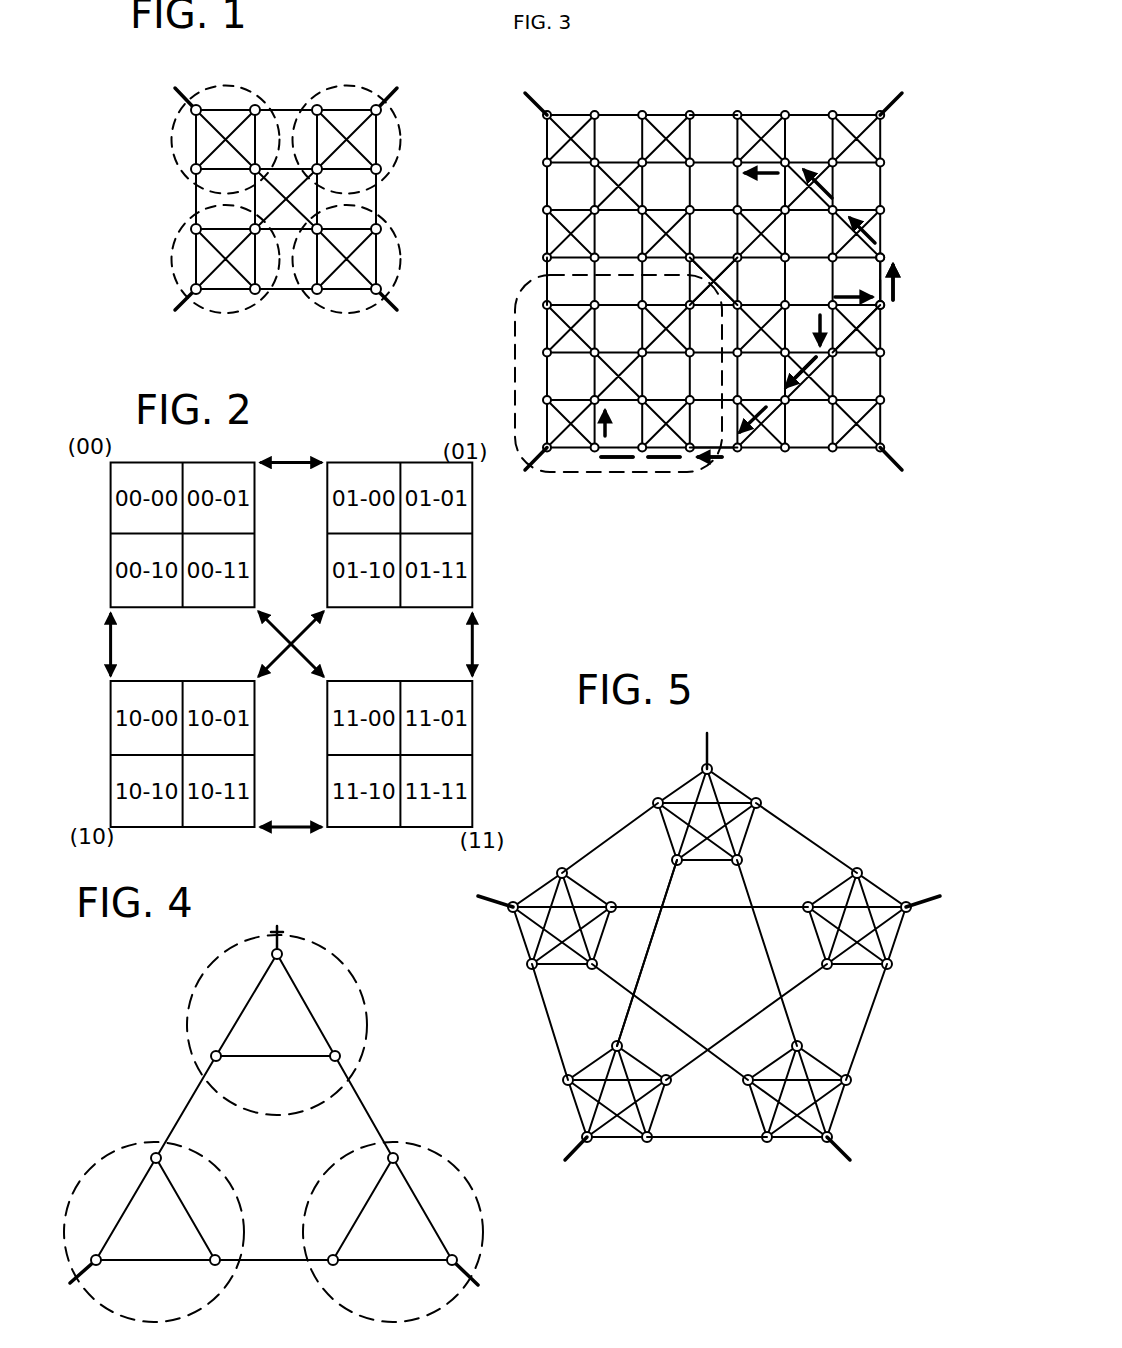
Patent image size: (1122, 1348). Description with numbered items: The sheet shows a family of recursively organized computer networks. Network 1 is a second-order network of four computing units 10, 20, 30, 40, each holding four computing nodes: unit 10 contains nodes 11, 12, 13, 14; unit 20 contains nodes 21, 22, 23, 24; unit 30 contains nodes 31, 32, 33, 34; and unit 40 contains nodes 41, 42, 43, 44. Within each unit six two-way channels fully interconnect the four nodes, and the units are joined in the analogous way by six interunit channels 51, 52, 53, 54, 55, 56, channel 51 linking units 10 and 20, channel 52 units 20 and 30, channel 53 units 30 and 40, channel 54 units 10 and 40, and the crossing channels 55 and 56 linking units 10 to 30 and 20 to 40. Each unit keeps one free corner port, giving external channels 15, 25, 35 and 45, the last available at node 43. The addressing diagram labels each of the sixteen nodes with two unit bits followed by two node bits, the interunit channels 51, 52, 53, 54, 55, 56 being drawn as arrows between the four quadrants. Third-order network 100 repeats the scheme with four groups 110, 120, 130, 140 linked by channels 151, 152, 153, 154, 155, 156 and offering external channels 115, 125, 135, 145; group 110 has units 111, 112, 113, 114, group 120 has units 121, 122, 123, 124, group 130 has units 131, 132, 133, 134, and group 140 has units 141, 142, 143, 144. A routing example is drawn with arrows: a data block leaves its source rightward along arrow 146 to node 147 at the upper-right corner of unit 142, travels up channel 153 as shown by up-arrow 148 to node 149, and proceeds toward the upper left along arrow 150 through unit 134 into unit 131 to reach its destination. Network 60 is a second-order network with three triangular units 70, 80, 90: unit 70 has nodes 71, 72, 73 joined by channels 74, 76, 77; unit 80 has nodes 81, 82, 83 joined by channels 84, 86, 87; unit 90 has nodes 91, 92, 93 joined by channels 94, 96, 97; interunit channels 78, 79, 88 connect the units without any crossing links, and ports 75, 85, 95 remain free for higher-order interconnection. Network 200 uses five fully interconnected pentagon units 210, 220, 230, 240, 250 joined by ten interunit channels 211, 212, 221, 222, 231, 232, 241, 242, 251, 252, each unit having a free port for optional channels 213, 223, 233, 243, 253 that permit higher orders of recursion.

In FIG. 1, the network 1 is at (380, 22).
In FIG. 1, the computing unit 10 is at (175, 263).
In FIG. 1, the computing node 11 is at (190, 229).
In FIG. 1, the computing node 12 is at (262, 229).
In FIG. 1, the computing node 13 is at (254, 296).
In FIG. 1, the computing node 14 is at (195, 297).
In FIG. 1, the communication channel 15 is at (181, 300).
In FIG. 1, the computing unit 20 is at (180, 132).
In FIG. 1, the computing node 21 is at (198, 103).
In FIG. 1, the computing node 22 is at (255, 103).
In FIG. 1, the computing node 23 is at (256, 176).
In FIG. 1, the computing node 24 is at (190, 166).
In FIG. 1, the communication channel 25 is at (180, 85).
In FIG. 1, the computing unit 30 is at (401, 141).
In FIG. 1, the computing node 31 is at (319, 103).
In FIG. 1, the computing node 32 is at (383, 112).
In FIG. 1, the computing node 33 is at (383, 169).
In FIG. 1, the computing node 34 is at (324, 173).
In FIG. 1, the communication channel 35 is at (398, 89).
In FIG. 1, the computing unit 40 is at (400, 263).
In FIG. 1, the computing node 41 is at (324, 229).
In FIG. 1, the computing node 42 is at (383, 231).
In FIG. 1, the computing node 43 is at (383, 290).
In FIG. 1, the computing node 44 is at (320, 296).
In FIG. 1, the additional two-way communication channel 45 is at (392, 306).
In FIG. 1, the two-way communication channel 51 is at (194, 196).
In FIG. 2, the two-way communication channel 51 is at (108, 644).
In FIG. 1, the two-way communication channel 52 is at (286, 105).
In FIG. 2, the two-way communication channel 52 is at (291, 461).
In FIG. 1, the two-way communication channel 53 is at (380, 191).
In FIG. 2, the two-way communication channel 53 is at (477, 641).
In FIG. 1, the two-way communication channel 54 is at (286, 296).
In FIG. 2, the two-way communication channel 54 is at (291, 829).
In FIG. 1, the two-way communication channel 55 is at (272, 186).
In FIG. 2, the two-way communication channel 55 is at (284, 650).
In FIG. 1, the two-way communication channel 56 is at (298, 196).
In FIG. 2, the two-way communication channel 56 is at (308, 648).
In FIG. 4, the network 60 is at (101, 960).
In FIG. 4, the unit 70 is at (348, 990).
In FIG. 4, the computing node 71 is at (283, 953).
In FIG. 4, the computing node 72 is at (343, 1057).
In FIG. 4, the computing node 73 is at (208, 1056).
In FIG. 4, the channel 74 is at (246, 1004).
In FIG. 4, the port 75 is at (278, 927).
In FIG. 4, the channel 76 is at (307, 1003).
In FIG. 4, the channel 77 is at (258, 1060).
In FIG. 4, the interunit communication channel 78 is at (188, 1103).
In FIG. 4, the interunit communication channel 79 is at (362, 1101).
In FIG. 4, the unit 80 is at (481, 1207).
In FIG. 4, the computing node 81 is at (394, 1150).
In FIG. 4, the computing node 82 is at (457, 1257).
In FIG. 4, the computing node 83 is at (334, 1266).
In FIG. 4, the channel 84 is at (424, 1209).
In FIG. 4, the port 85 is at (478, 1282).
In FIG. 4, the channel 86 is at (398, 1262).
In FIG. 4, the channel 87 is at (360, 1209).
In FIG. 4, the interunit communication channel 88 is at (262, 1262).
In FIG. 4, the unit 90 is at (88, 1170).
In FIG. 4, the computing node 91 is at (150, 1150).
In FIG. 4, the computing node 92 is at (216, 1266).
In FIG. 4, the computing node 93 is at (96, 1266).
In FIG. 4, the channel 94 is at (189, 1211).
In FIG. 4, the port 95 is at (74, 1285).
In FIG. 4, the channel 96 is at (158, 1262).
In FIG. 4, the channel 97 is at (123, 1211).
In FIG. 3, the network 100 is at (884, 22).
In FIG. 3, the group 110 is at (537, 370).
In FIG. 3, the unit 111 is at (566, 314).
In FIG. 3, the unit 112 is at (667, 314).
In FIG. 3, the unit 113 is at (566, 406).
In FIG. 3, the unit 114 is at (672, 406).
In FIG. 3, the communication channel 115 is at (523, 470).
In FIG. 3, the group 120 is at (614, 96).
In FIG. 3, the unit 121 is at (564, 126).
In FIG. 3, the unit 122 is at (661, 126).
In FIG. 3, the unit 123 is at (564, 214).
In FIG. 3, the unit 124 is at (661, 214).
In FIG. 3, the communication channel 125 is at (534, 99).
In FIG. 3, the group 130 is at (886, 186).
In FIG. 3, the unit 131 is at (764, 124).
In FIG. 3, the unit 132 is at (861, 124).
In FIG. 3, the unit 133 is at (754, 216).
In FIG. 3, the unit 134 is at (869, 213).
In FIG. 3, the communication channel 135 is at (892, 101).
In FIG. 3, the group 140 is at (806, 465).
In FIG. 3, the unit 141 is at (765, 313).
In FIG. 3, the unit 142 is at (862, 296).
In FIG. 3, the unit 143 is at (746, 406).
In FIG. 3, the unit 144 is at (864, 408).
In FIG. 3, the communication channel 145 is at (893, 462).
In FIG. 3, the arrow 146 is at (875, 312).
In FIG. 3, the node 147 is at (884, 306).
In FIG. 3, the up-arrow 148 is at (897, 291).
In FIG. 3, the node 149 is at (884, 258).
In FIG. 3, the arrow 150 is at (866, 239).
In FIG. 3, the two-way communication channel 151 is at (545, 281).
In FIG. 3, the two-way communication channel 152 is at (712, 112).
In FIG. 3, the two-way communication channel 153 is at (898, 281).
In FIG. 3, the two-way communication channel 154 is at (723, 451).
In FIG. 3, the two-way communication channel 155 is at (720, 263).
In FIG. 3, the two-way communication channel 156 is at (733, 263).
In FIG. 5, the network 200 is at (870, 694).
In FIG. 5, the pentagon unit 210 is at (733, 777).
In FIG. 5, the interunit communication channel 211 is at (806, 839).
In FIG. 5, the interunit communication channel 212 is at (748, 885).
In FIG. 5, the optional two-way communication channel 213 is at (708, 742).
In FIG. 5, the pentagon unit 220 is at (888, 888).
In FIG. 5, the interunit communication channel 221 is at (866, 1031).
In FIG. 5, the interunit communication channel 222 is at (795, 989).
In FIG. 5, the optional two-way communication channel 223 is at (927, 902).
In FIG. 5, the pentagon unit 230 is at (846, 1103).
In FIG. 5, the interunit communication channel 231 is at (712, 1140).
In FIG. 5, the interunit communication channel 232 is at (738, 1075).
In FIG. 5, the optional two-way communication channel 233 is at (843, 1153).
In FIG. 5, the pentagon unit 240 is at (610, 1146).
In FIG. 5, the interunit communication channel 241 is at (554, 1045).
In FIG. 5, the interunit communication channel 242 is at (628, 1011).
In FIG. 5, the optional two-way communication channel 243 is at (571, 1155).
In FIG. 5, the pentagon unit 250 is at (514, 936).
In FIG. 5, the interunit communication channel 251 is at (614, 839).
In FIG. 5, the interunit communication channel 252 is at (662, 904).
In FIG. 5, the optional two-way communication channel 253 is at (488, 897).